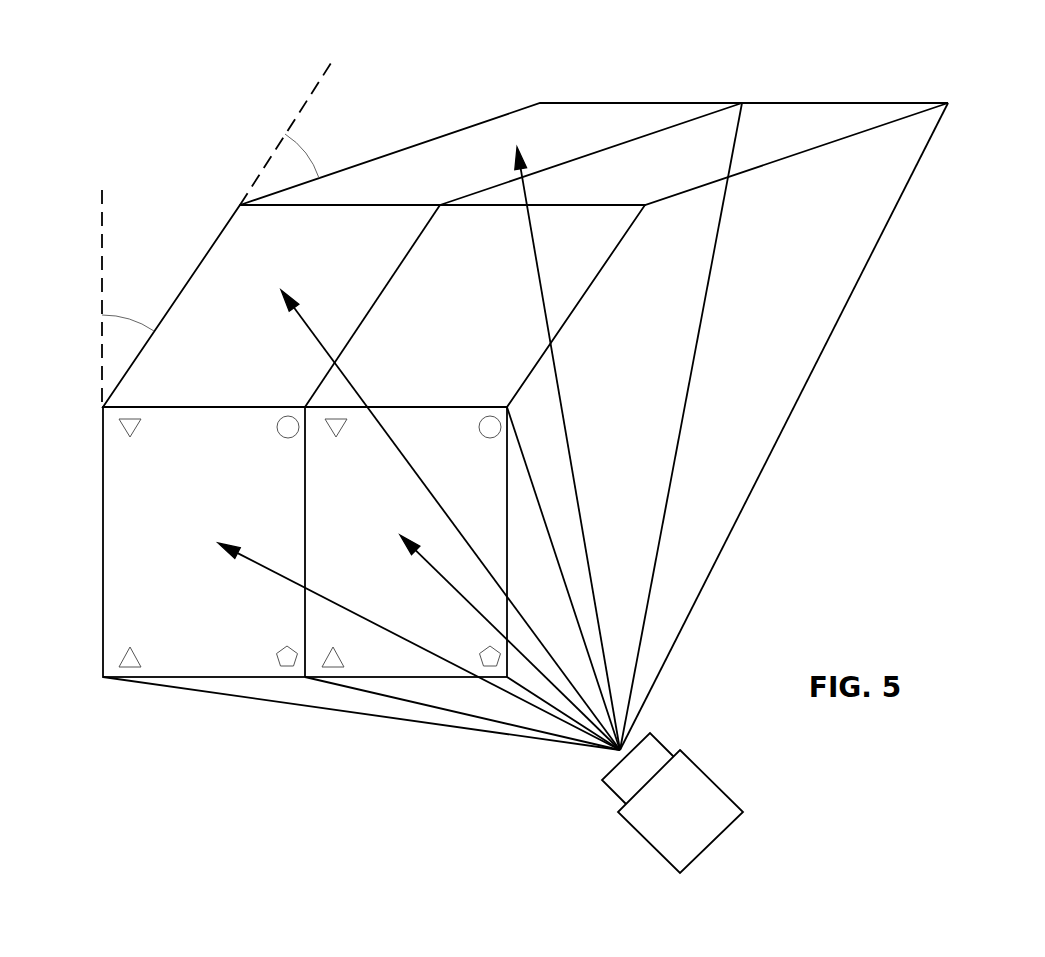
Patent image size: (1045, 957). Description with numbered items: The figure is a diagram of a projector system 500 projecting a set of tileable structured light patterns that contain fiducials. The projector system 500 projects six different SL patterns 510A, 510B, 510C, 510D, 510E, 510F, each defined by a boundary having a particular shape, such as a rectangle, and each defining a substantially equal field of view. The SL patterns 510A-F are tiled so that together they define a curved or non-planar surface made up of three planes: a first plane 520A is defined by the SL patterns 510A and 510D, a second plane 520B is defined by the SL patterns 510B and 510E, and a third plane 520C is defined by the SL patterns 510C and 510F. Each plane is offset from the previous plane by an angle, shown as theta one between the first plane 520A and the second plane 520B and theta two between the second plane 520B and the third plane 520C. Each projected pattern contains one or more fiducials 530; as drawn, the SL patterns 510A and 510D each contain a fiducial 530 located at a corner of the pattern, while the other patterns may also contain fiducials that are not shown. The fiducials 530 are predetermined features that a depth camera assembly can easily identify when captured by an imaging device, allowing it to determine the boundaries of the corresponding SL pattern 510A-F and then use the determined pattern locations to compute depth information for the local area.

The projector system 500 is at (525, 510).
The SL pattern 510A is at (369, 646).
The SL pattern 510B is at (411, 520).
The SL pattern 510C is at (502, 448).
The SL pattern 510D is at (448, 583).
The SL pattern 510E is at (475, 306).
The SL pattern 510F is at (694, 154).
The first plane 520A is at (102, 610).
The second plane 520B is at (205, 257).
The third plane 520C is at (458, 131).
The fiducial 530 is at (124, 428).